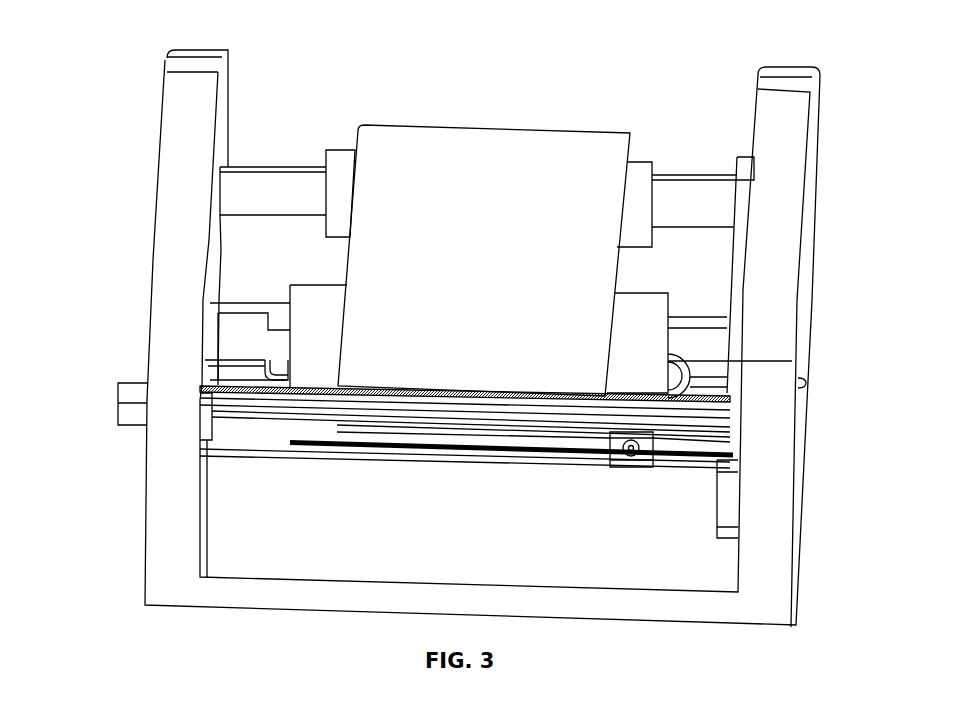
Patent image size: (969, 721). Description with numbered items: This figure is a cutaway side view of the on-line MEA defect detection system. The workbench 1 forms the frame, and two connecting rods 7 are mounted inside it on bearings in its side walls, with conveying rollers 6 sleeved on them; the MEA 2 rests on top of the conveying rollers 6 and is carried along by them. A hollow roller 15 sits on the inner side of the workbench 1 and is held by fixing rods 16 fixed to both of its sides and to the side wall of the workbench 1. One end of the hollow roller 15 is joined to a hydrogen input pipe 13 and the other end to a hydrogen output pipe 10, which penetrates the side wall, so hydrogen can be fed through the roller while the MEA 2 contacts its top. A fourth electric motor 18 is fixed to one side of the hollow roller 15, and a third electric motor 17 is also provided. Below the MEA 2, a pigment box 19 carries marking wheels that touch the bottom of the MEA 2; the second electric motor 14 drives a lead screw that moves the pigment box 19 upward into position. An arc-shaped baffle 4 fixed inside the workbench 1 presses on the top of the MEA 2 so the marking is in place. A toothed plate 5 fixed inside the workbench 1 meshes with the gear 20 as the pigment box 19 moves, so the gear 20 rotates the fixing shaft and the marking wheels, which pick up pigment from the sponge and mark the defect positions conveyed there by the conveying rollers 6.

The workbench 1 is at (145, 525).
The MEA 2 is at (410, 277).
The arc-shaped baffle 4 is at (267, 400).
The toothed plate 5 is at (293, 443).
The conveying roller 6 is at (335, 163).
The connecting rod 7 is at (307, 187).
The hydrogen output pipe 10 is at (697, 373).
The hydrogen input pipe 13 is at (237, 360).
The second electric motor 14 is at (120, 422).
The hollow roller 15 is at (317, 307).
The fixing rod 16 is at (247, 382).
The third electric motor 17 is at (273, 317).
The fourth electric motor 18 is at (275, 347).
The pigment box 19 is at (657, 443).
The gear 20 is at (722, 473).